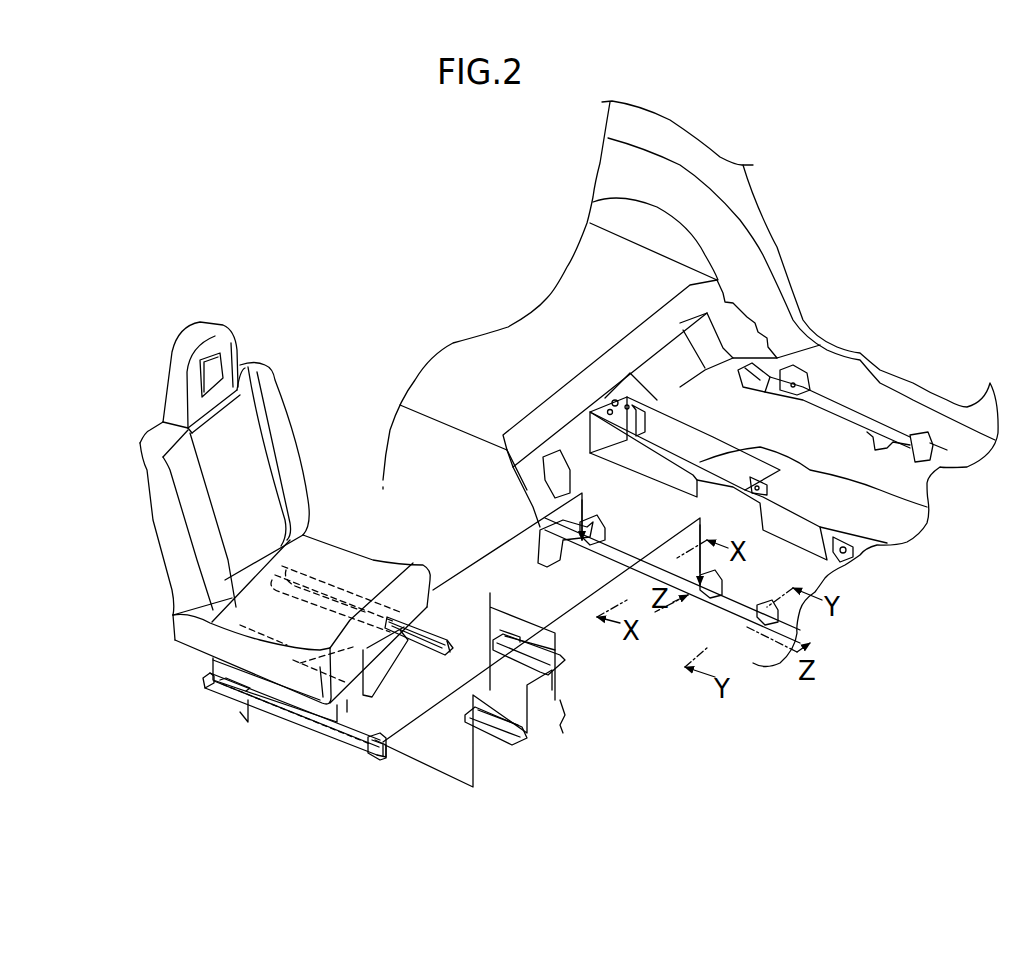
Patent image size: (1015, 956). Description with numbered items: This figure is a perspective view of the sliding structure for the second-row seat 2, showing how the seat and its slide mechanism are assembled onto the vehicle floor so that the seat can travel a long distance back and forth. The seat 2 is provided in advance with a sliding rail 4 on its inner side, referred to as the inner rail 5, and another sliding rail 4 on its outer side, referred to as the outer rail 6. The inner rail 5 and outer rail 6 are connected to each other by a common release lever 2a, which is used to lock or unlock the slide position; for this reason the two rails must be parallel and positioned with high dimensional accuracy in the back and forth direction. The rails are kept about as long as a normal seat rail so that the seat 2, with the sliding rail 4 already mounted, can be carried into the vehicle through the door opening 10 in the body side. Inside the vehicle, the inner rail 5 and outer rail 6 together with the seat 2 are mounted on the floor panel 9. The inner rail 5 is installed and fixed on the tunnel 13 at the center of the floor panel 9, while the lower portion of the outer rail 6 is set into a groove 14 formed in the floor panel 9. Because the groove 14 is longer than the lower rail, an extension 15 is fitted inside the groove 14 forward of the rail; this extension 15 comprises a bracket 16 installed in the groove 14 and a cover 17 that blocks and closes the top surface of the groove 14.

The seat 2 is at (172, 562).
The release lever 2a is at (383, 677).
The sliding rail 4 is at (305, 733).
The inner rail 5 is at (433, 631).
The outer rail 6 is at (352, 750).
The floor panel 9 is at (823, 427).
The door opening 10 is at (778, 248).
The tunnel 13 is at (737, 458).
The groove 14 is at (798, 632).
The extension 15 is at (558, 667).
The bracket 16 is at (508, 733).
The cover 17 is at (563, 655).